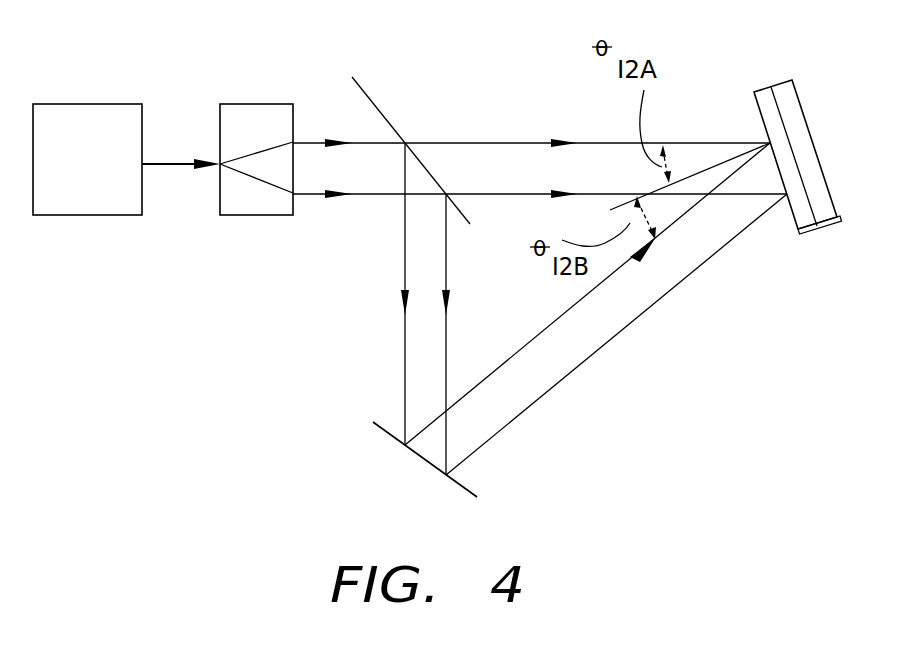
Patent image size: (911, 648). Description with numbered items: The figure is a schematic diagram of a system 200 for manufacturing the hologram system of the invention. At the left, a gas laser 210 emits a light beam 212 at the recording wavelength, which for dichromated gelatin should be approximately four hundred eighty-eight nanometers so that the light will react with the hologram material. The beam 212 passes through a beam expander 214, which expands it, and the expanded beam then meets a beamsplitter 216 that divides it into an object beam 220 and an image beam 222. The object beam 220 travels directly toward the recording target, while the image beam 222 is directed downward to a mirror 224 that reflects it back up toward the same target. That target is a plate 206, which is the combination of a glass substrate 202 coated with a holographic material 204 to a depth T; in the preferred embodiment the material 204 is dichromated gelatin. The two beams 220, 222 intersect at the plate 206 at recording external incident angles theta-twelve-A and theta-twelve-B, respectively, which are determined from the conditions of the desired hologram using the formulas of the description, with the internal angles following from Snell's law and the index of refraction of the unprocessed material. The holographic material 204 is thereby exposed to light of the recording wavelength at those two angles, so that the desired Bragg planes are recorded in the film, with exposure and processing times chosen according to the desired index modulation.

The system for manufacturing the hologram system 200 is at (212, 383).
The glass substrate 202 is at (792, 80).
The holographic material 204 is at (760, 90).
The plate 206 is at (820, 230).
The gas laser 210 is at (93, 104).
The light beam 212 is at (178, 164).
The beam expander 214 is at (270, 104).
The beamsplitter 216 is at (372, 98).
The object beam 220 is at (487, 143).
The image beam 222 is at (400, 361).
The mirror 224 is at (400, 440).